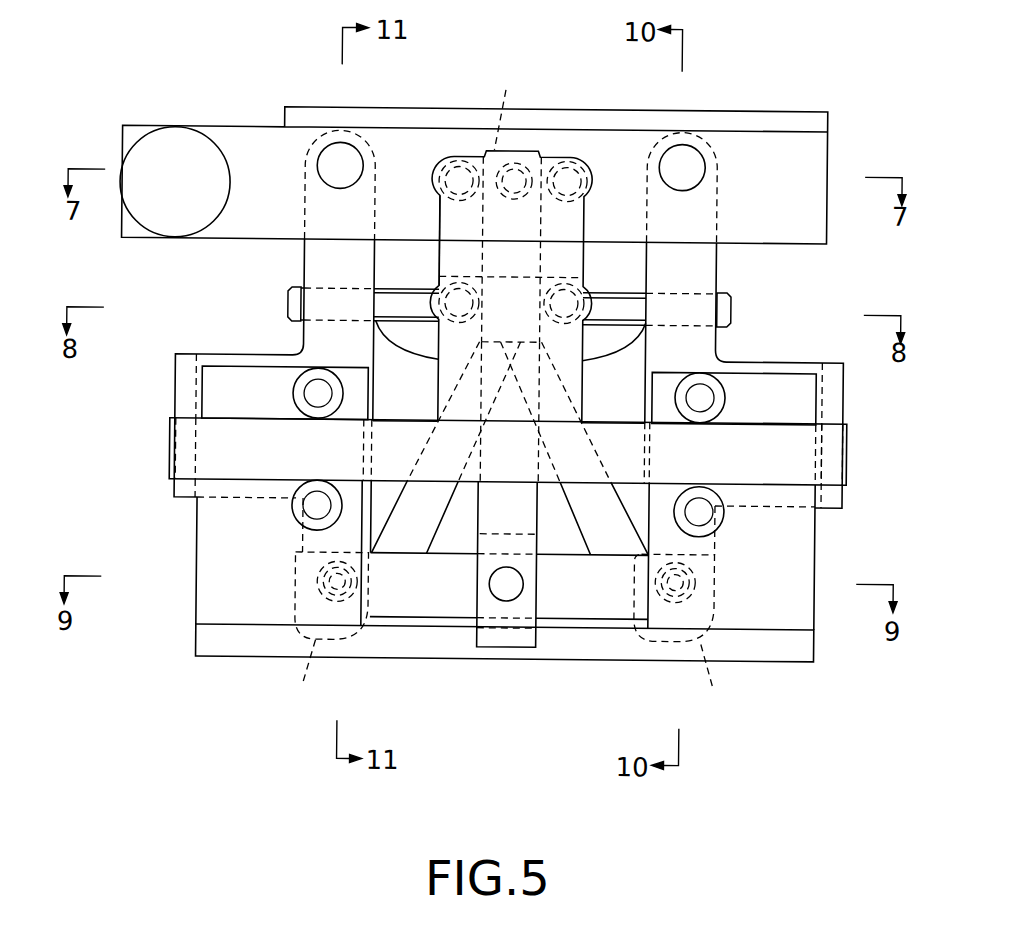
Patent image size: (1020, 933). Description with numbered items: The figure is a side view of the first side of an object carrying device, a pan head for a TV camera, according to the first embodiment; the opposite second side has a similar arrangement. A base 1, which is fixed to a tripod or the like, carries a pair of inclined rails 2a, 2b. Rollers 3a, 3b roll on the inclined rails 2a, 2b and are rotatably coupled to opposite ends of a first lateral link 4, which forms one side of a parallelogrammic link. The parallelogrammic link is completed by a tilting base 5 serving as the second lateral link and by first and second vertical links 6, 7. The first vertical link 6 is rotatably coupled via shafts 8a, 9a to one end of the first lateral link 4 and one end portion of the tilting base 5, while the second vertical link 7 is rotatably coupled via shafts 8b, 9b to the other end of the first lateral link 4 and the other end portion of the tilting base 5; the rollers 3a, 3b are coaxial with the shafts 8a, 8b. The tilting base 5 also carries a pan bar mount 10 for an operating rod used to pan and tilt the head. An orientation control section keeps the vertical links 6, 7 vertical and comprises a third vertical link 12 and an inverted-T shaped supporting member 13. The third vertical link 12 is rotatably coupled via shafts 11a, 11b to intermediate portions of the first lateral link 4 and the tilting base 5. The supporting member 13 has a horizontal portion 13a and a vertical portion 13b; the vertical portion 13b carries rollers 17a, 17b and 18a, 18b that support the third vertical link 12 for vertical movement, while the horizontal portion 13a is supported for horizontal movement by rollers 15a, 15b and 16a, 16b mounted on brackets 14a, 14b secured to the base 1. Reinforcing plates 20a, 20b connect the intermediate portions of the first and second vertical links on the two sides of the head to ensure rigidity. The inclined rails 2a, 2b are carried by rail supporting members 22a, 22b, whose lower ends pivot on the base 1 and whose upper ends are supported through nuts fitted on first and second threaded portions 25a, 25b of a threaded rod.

The base 1 is at (232, 649).
The inclined rail 2a is at (578, 504).
The inclined rail 2b is at (434, 502).
The roller 3a is at (716, 608).
The roller 3b is at (297, 600).
The first lateral link 4 is at (578, 607).
The tilting base 5 is at (812, 161).
The first vertical link 6 is at (705, 267).
The second vertical link 7 is at (303, 262).
The shaft 8a is at (725, 675).
The shaft 8b is at (288, 668).
The shaft 9a is at (705, 166).
The shaft 9b is at (315, 170).
The pan bar mount 10 is at (180, 136).
The shaft 11a is at (501, 597).
The shaft 11b is at (500, 104).
The third vertical link 12 is at (502, 533).
The supporting member 13 is at (563, 251).
The horizontal portion 13a is at (171, 448).
The vertical portion 13b is at (452, 238).
The bracket 14a is at (805, 563).
The bracket 14b is at (215, 568).
The roller 15a is at (718, 528).
The roller 15b is at (297, 522).
The roller 16a is at (725, 400).
The roller 16b is at (292, 390).
The roller 17a is at (608, 178).
The roller 17b is at (440, 187).
The roller 18a is at (583, 300).
The roller 18b is at (440, 298).
The reinforcing plate 20a is at (834, 395).
The reinforcing plate 20b is at (185, 388).
The rail supporting member 22a is at (628, 363).
The rail supporting member 22b is at (390, 363).
The first threaded portion 25a is at (732, 310).
The second threaded portion 25b is at (288, 308).